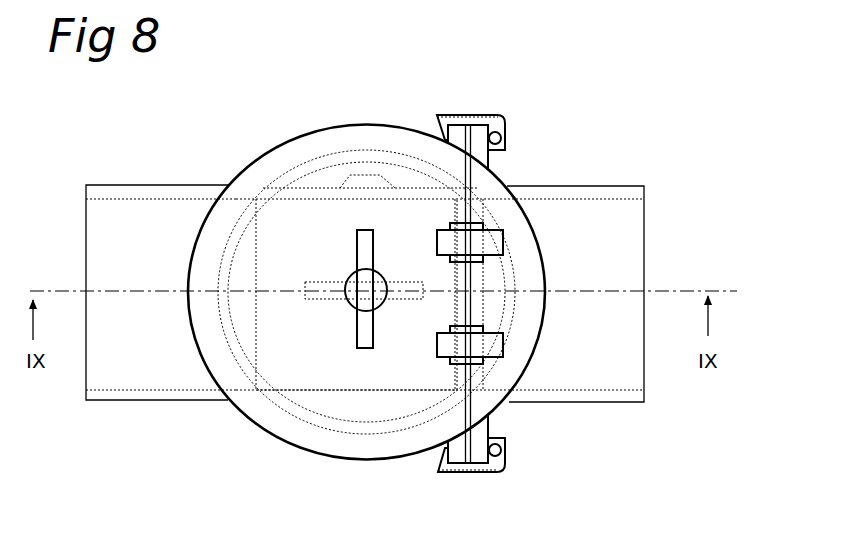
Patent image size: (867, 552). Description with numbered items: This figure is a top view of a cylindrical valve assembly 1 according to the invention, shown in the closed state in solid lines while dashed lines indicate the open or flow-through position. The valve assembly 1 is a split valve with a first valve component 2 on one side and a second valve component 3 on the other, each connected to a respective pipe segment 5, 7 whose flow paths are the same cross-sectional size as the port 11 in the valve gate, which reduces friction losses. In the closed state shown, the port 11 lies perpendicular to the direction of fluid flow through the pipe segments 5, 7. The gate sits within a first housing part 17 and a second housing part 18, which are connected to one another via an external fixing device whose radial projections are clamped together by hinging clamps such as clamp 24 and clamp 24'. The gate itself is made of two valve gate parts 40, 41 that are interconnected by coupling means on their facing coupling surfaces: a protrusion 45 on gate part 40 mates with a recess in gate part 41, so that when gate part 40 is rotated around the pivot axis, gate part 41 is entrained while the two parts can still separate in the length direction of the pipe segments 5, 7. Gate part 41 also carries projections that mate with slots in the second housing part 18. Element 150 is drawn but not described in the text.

The valve assembly 1 is at (522, 98).
The first valve component 2 is at (222, 147).
The second valve component 3 is at (640, 150).
The pipe segment 5 is at (108, 395).
The pipe segment 7 is at (602, 391).
The port 11 is at (331, 360).
The first housing part 17 is at (405, 140).
The second housing part 18 is at (492, 180).
The hinging clamp 24 is at (519, 188).
The lower clamping bolt 24' is at (491, 428).
The valve gate part 40 is at (323, 402).
The valve gate part 41 is at (332, 178).
The protrusion 45 is at (360, 183).
The valve disc 150 is at (360, 243).